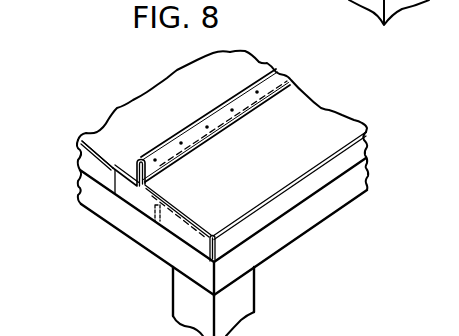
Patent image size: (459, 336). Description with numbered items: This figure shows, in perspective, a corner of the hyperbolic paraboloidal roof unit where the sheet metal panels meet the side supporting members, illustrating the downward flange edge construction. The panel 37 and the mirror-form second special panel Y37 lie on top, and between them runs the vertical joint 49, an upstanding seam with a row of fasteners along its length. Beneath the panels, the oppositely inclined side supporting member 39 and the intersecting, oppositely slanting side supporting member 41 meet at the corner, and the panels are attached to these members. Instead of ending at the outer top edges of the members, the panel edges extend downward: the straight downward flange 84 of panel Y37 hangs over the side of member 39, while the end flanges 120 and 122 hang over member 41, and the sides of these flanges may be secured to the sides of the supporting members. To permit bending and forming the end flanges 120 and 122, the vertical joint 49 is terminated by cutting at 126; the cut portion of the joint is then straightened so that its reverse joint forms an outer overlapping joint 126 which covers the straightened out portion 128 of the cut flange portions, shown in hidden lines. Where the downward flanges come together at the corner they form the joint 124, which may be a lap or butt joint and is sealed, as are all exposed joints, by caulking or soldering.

The sheet metal panel 37 is at (178, 84).
The second special panel Y37 is at (318, 115).
The vertical joint 49 is at (275, 78).
The straight downward flange 84 is at (366, 153).
The side supporting member 39 is at (342, 191).
The side supporting member 41 is at (138, 230).
The end flange 122 is at (83, 155).
The cut / outer overlapping joint 126 is at (144, 178).
The straightened out portion 128 is at (157, 208).
The end flange 120 is at (187, 233).
The joint 124 is at (173, 283).